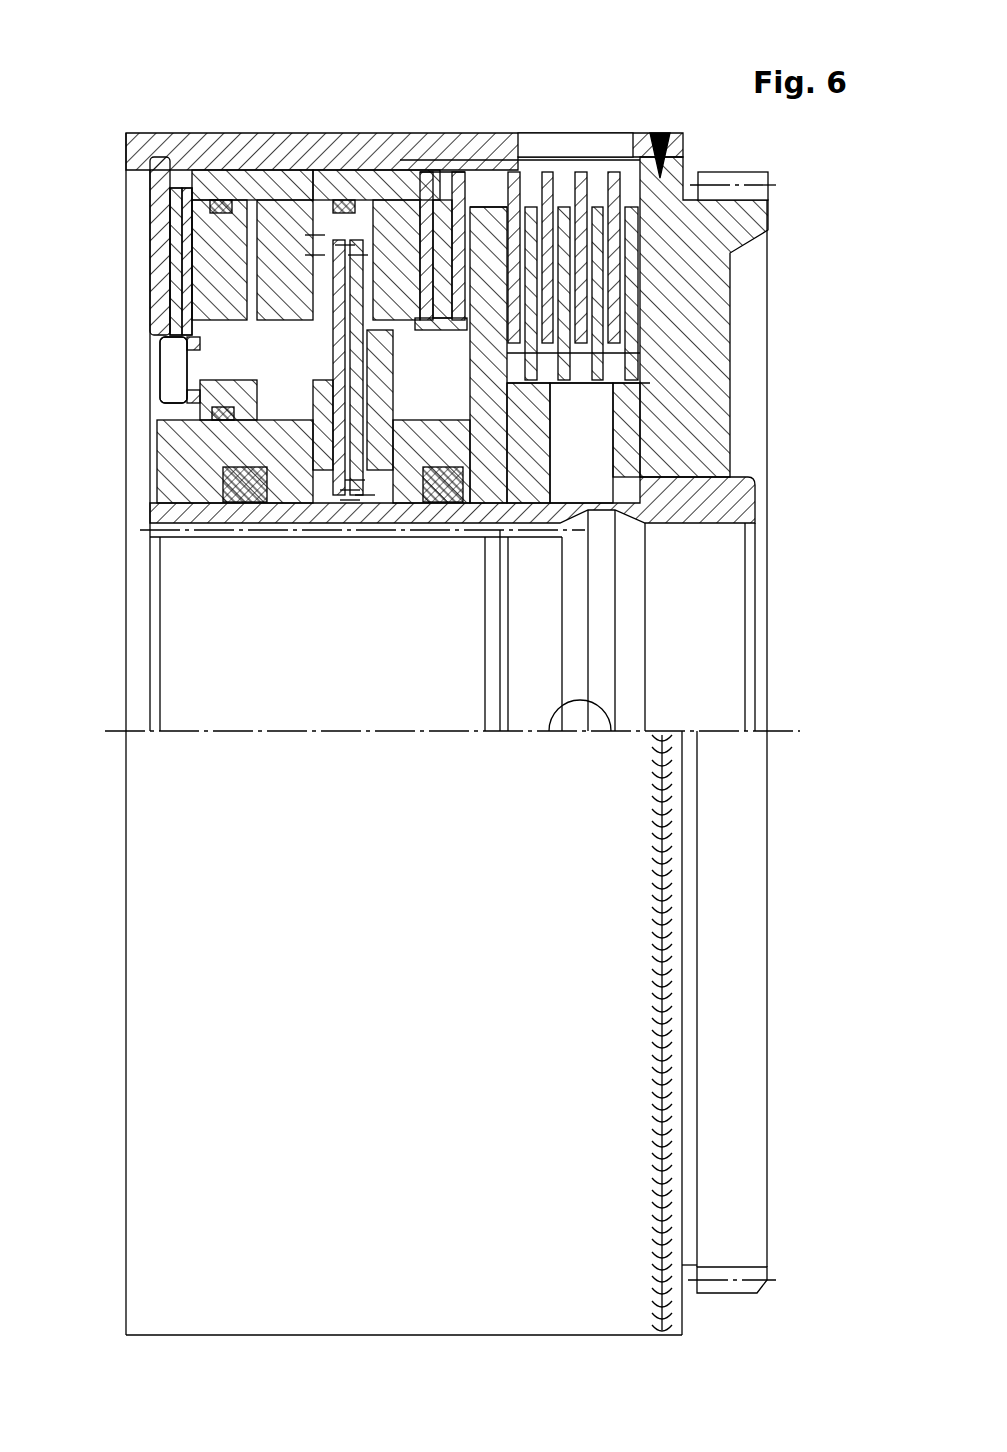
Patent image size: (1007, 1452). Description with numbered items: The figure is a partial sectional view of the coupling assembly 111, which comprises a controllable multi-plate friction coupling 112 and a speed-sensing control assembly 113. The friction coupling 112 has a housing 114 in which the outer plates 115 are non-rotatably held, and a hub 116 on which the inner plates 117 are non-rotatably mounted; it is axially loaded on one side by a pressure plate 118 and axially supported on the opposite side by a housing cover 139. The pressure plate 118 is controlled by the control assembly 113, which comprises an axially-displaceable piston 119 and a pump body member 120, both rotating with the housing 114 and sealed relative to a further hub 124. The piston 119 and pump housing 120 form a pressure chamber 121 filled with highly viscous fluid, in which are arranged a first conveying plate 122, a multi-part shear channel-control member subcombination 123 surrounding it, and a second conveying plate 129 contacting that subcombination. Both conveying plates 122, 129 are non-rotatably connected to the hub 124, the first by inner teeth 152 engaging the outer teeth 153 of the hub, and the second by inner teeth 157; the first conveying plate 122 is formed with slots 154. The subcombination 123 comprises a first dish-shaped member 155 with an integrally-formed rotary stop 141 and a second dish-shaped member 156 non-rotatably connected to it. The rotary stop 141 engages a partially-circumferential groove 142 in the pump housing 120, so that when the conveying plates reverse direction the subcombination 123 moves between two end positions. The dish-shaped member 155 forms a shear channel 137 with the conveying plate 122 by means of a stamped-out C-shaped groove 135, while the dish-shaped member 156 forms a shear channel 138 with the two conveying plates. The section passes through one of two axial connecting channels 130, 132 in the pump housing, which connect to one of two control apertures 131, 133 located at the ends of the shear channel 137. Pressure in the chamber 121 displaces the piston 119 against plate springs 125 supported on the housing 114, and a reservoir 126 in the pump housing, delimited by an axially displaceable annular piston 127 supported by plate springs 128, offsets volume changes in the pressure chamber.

The coupling assembly 111 is at (800, 230).
The multi-plate friction coupling 112 is at (525, 201).
The speed-sensing control assembly 113 is at (210, 98).
The housing 114 is at (657, 160).
The outer plates 115 is at (580, 185).
The hub 116 is at (638, 450).
The inner plates 117 is at (660, 370).
The pressure plate 118 is at (500, 215).
The piston 119 is at (450, 235).
The pump body member 120 is at (242, 185).
The pressure chamber 121 is at (312, 258).
The first conveying plate 122 is at (315, 235).
The shear channel-control member subcombination 123 is at (313, 445).
The further hub 124 is at (177, 515).
The plate springs 125 is at (470, 250).
The reservoir 126 is at (270, 225).
The annular piston 127 is at (215, 288).
The plate springs 128 is at (158, 178).
The second conveying plate 129 is at (390, 250).
The axial connecting channel 130 is at (280, 365).
The control aperture 131 is at (315, 330).
The axial connecting channel 132 is at (280, 365).
The control aperture 133 is at (315, 330).
The C-shaped groove 135 is at (380, 425).
The shear channel 137 is at (300, 268).
The shear channel 138 is at (415, 215).
The housing cover 139 is at (700, 272).
The rotary stop 141 is at (336, 400).
The partially-circumferential groove 142 is at (340, 470).
The inner teeth 152 is at (350, 500).
The outer teeth 153 is at (352, 480).
The slots 154 is at (345, 490).
The first dish-shaped member 155 is at (358, 255).
The second dish-shaped member 156 is at (345, 245).
The inner teeth 157 is at (365, 495).